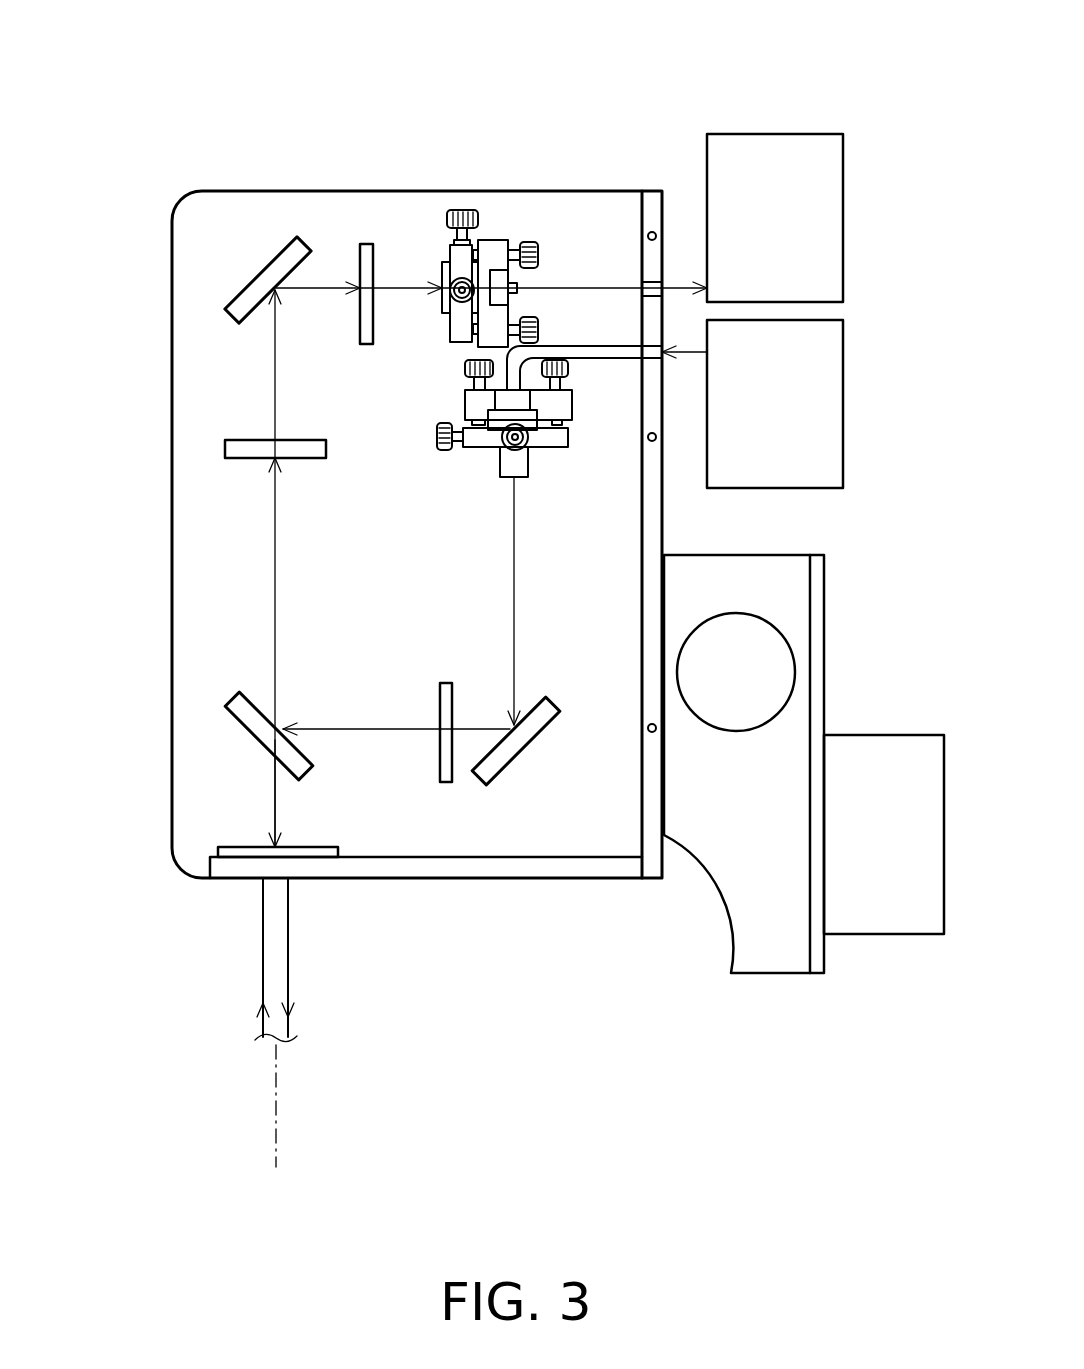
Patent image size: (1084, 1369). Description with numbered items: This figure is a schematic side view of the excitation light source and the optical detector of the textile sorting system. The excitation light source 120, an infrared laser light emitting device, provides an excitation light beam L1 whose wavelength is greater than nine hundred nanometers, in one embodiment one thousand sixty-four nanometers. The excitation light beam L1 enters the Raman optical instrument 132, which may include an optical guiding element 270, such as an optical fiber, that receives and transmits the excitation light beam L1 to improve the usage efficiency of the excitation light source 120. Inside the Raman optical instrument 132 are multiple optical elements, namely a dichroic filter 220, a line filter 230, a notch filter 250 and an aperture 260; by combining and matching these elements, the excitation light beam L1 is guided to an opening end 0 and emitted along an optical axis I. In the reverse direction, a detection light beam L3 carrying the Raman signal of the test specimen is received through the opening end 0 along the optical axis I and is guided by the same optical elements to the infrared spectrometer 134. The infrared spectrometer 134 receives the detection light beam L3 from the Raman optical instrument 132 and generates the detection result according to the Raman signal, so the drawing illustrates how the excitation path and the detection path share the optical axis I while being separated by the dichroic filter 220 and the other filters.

The Raman optical instrument 132 is at (176, 334).
The dichroic filter 220 is at (267, 272).
The line filter 230 is at (450, 763).
The notch filter 250 is at (230, 446).
The aperture 260 is at (369, 262).
The optical guiding element 270 is at (602, 354).
The infrared spectrometer 134 is at (820, 177).
The excitation light source 120 is at (822, 430).
The opening end 0 is at (262, 878).
The detection light beam L3 is at (205, 1008).
The excitation light beam L1 is at (288, 978).
The optical axis I is at (276, 1122).